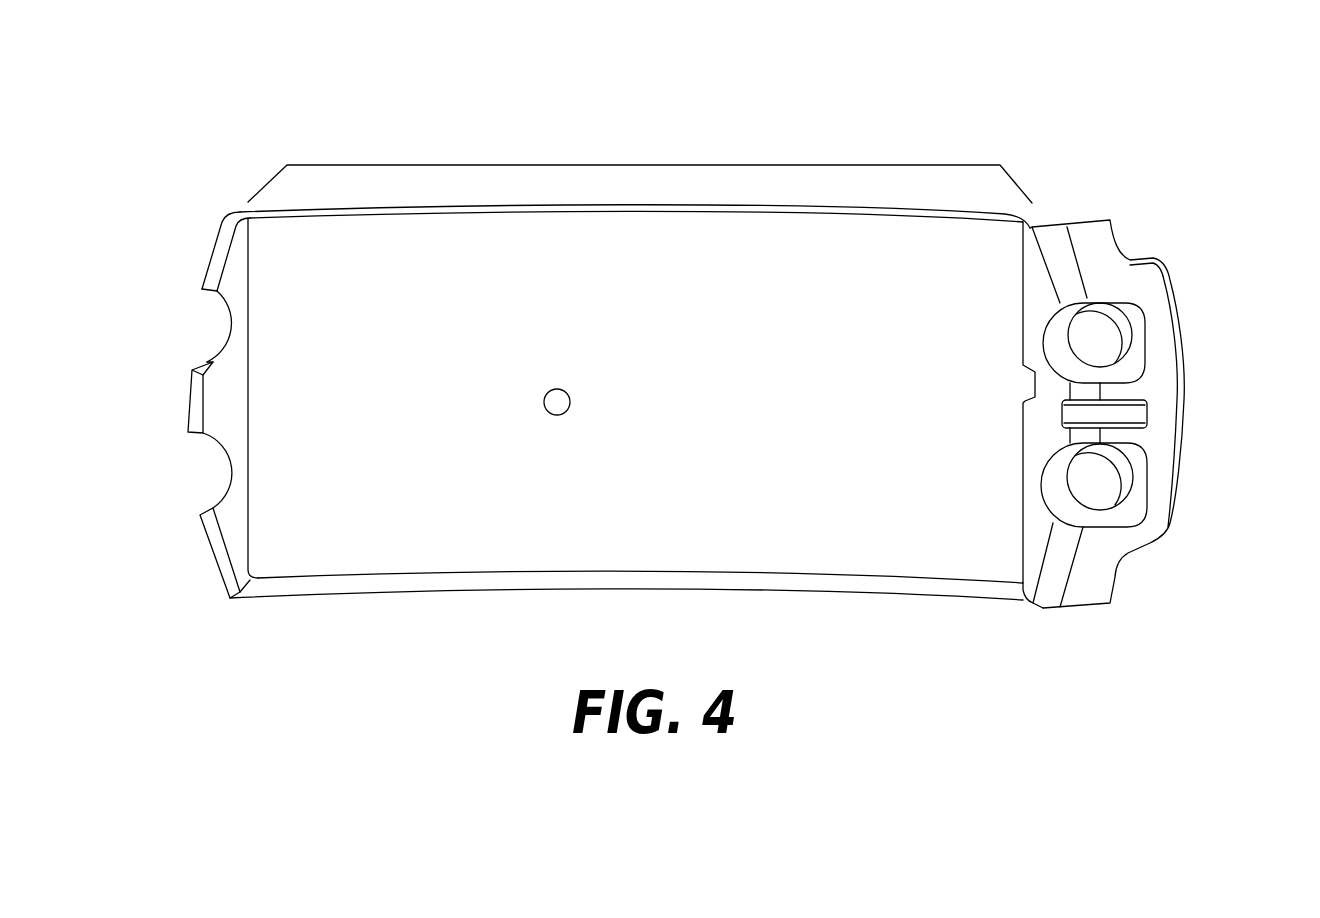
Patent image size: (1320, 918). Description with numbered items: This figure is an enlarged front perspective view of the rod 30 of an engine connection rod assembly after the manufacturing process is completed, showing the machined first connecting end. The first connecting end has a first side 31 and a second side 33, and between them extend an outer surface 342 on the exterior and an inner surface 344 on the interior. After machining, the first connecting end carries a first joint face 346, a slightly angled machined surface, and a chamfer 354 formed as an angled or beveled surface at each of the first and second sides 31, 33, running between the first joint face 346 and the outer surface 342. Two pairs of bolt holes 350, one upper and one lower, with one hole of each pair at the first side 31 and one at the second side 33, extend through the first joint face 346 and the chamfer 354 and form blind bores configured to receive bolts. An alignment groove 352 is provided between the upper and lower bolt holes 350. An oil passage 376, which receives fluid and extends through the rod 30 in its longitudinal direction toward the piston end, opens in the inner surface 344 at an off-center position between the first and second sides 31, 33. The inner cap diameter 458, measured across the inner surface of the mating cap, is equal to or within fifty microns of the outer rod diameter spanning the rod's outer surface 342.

The rod 30 is at (226, 126).
The first side 31 is at (215, 328).
The second side 33 is at (1220, 482).
The outer surface 342 is at (1178, 298).
The inner surface 344 is at (328, 230).
The first joint face 346 is at (1045, 238).
The bolt holes 350 is at (1093, 323).
The alignment groove 352 is at (1137, 410).
The chamfer 354 is at (1163, 345).
The oil passage 376 is at (550, 405).
The inner cap diameter 458 is at (633, 165).